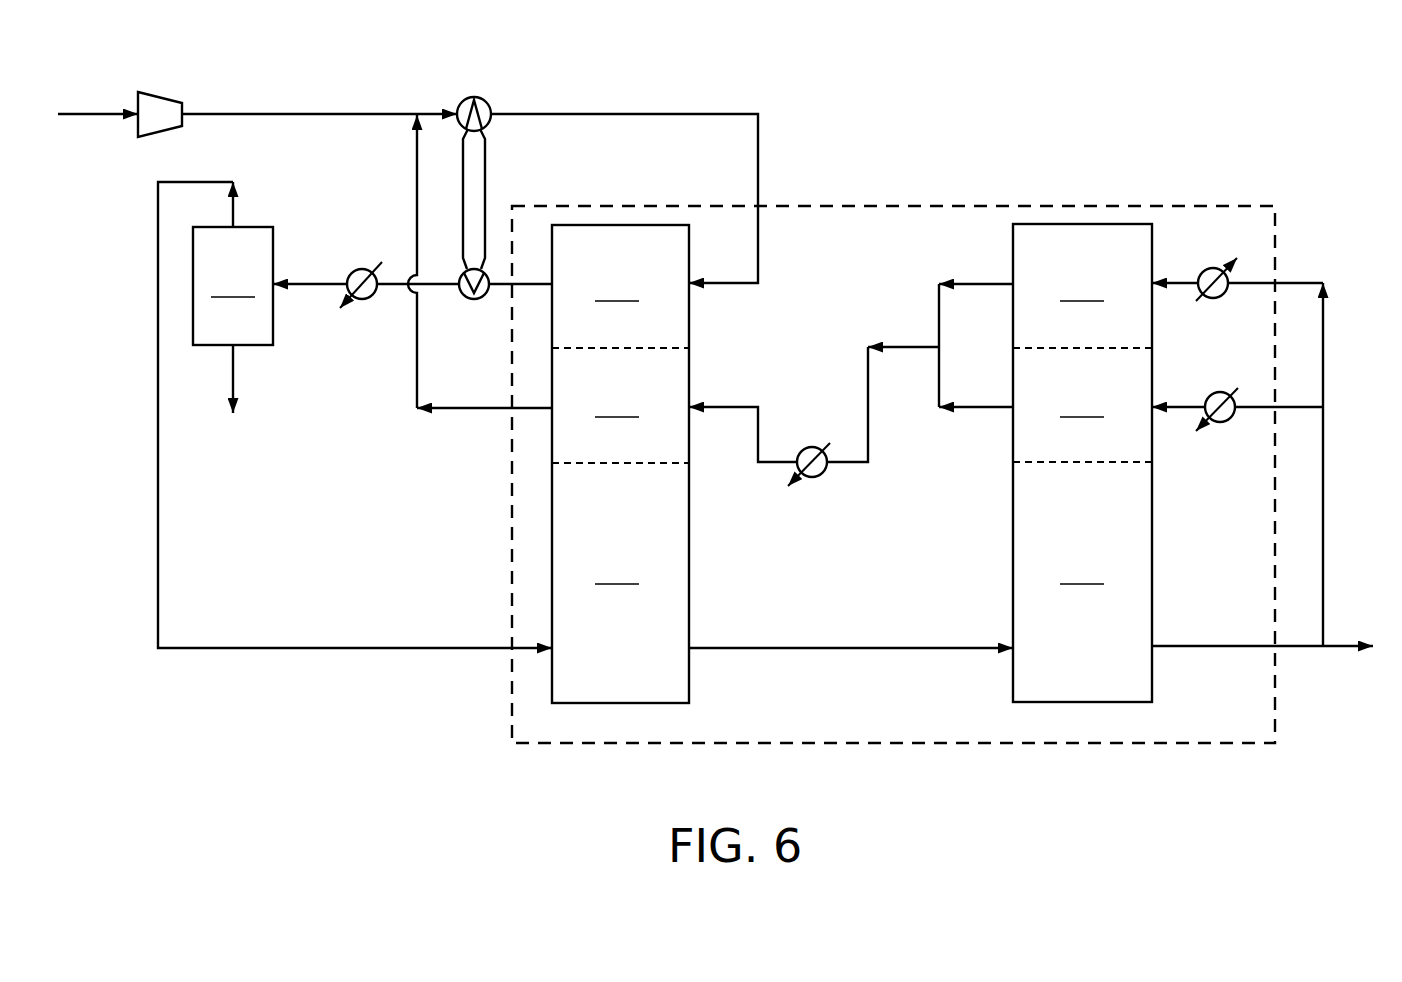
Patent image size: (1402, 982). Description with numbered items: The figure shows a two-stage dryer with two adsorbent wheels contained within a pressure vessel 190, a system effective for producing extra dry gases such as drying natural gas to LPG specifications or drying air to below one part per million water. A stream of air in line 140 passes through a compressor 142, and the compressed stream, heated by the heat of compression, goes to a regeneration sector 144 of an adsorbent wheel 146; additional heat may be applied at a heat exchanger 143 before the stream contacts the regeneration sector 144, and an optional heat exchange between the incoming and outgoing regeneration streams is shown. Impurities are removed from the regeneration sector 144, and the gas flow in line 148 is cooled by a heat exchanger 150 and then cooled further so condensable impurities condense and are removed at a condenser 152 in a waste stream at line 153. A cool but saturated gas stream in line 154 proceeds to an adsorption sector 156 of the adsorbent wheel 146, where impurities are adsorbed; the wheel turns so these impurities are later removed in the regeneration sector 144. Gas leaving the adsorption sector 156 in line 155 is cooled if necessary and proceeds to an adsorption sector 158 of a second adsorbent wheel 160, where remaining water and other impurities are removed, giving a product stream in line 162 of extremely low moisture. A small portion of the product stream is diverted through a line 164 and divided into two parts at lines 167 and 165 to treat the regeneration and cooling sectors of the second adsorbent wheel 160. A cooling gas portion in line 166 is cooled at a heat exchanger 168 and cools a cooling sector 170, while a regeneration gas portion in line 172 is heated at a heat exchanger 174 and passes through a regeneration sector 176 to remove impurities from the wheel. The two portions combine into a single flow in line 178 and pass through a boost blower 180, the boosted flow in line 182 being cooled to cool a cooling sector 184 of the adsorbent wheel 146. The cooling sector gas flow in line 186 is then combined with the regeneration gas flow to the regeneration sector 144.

The line 140 is at (97, 117).
The compressor 142 is at (160, 112).
The heat exchanger 143 is at (477, 100).
The regeneration sector 144 is at (617, 289).
The adsorbent wheel 146 is at (704, 548).
The line 148 is at (320, 283).
The heat exchanger 150 is at (372, 300).
The condenser 152 is at (233, 286).
The line 153 is at (235, 370).
The line 154 is at (355, 650).
The line 155 is at (855, 650).
The adsorption sector 156 is at (617, 572).
The adsorption sector 158 is at (1082, 572).
The second adsorbent wheel 160 is at (1166, 548).
The line 162 is at (1237, 648).
The line 164 is at (1325, 508).
The line 165 is at (1258, 410).
The line 166 is at (975, 282).
The line 167 is at (1258, 287).
The heat exchanger 168 is at (1210, 398).
The cooling sector 170 is at (1082, 405).
The line 172 is at (975, 412).
The heat exchanger 174 is at (1208, 280).
The regeneration sector 176 is at (1082, 289).
The line 178 is at (900, 345).
The boost blower 180 is at (815, 468).
The line 182 is at (760, 432).
The cooling sector 184 is at (617, 405).
The line 186 is at (470, 410).
The pressure vessel 190 is at (988, 205).